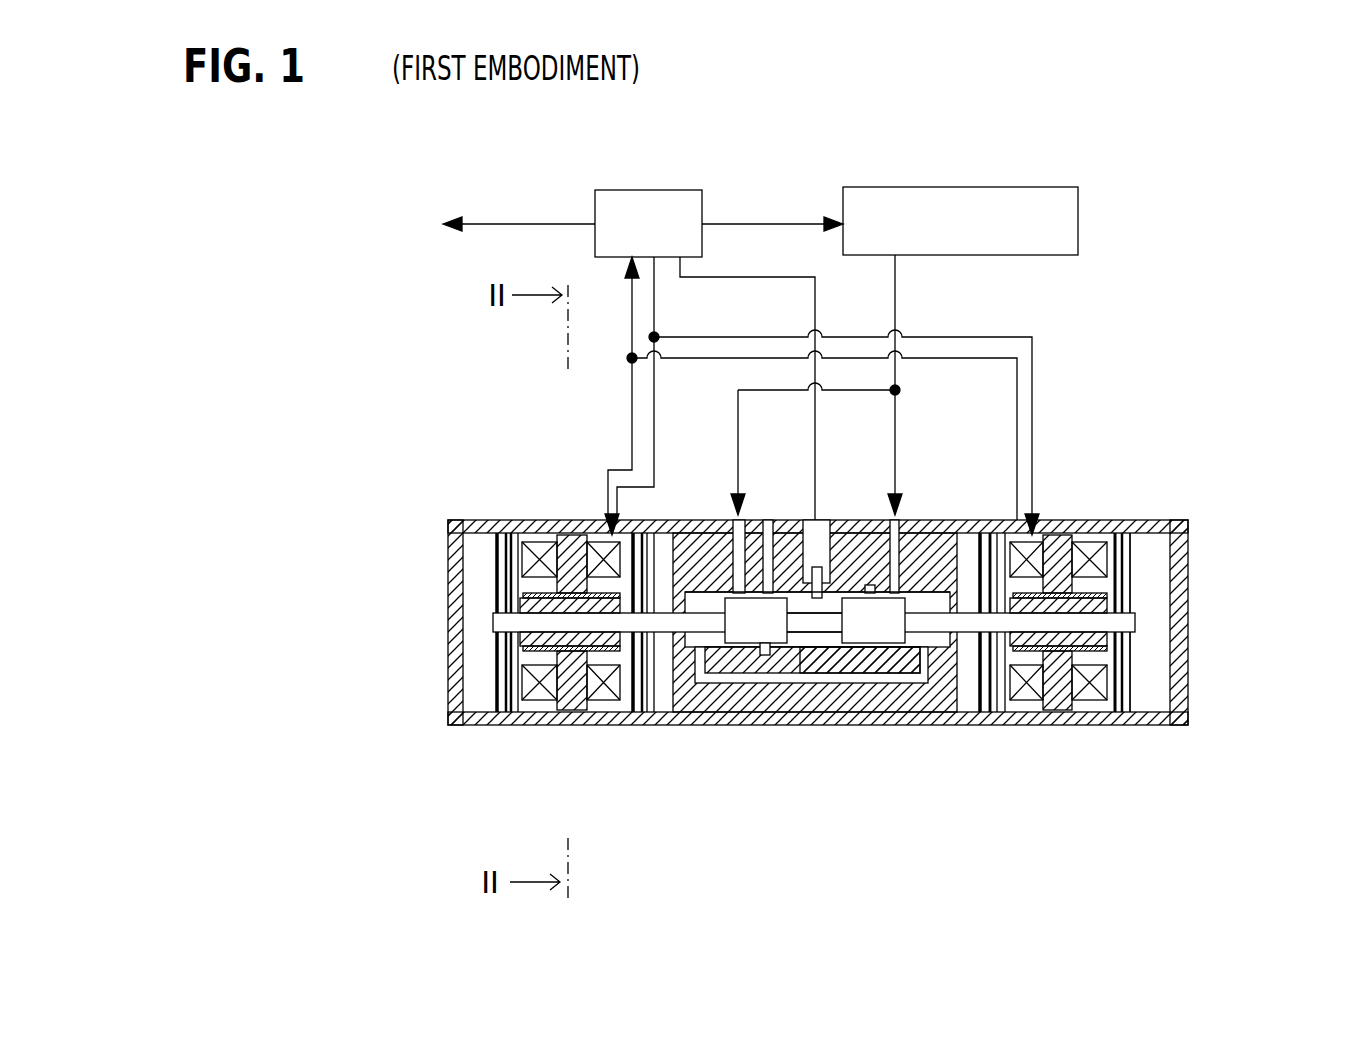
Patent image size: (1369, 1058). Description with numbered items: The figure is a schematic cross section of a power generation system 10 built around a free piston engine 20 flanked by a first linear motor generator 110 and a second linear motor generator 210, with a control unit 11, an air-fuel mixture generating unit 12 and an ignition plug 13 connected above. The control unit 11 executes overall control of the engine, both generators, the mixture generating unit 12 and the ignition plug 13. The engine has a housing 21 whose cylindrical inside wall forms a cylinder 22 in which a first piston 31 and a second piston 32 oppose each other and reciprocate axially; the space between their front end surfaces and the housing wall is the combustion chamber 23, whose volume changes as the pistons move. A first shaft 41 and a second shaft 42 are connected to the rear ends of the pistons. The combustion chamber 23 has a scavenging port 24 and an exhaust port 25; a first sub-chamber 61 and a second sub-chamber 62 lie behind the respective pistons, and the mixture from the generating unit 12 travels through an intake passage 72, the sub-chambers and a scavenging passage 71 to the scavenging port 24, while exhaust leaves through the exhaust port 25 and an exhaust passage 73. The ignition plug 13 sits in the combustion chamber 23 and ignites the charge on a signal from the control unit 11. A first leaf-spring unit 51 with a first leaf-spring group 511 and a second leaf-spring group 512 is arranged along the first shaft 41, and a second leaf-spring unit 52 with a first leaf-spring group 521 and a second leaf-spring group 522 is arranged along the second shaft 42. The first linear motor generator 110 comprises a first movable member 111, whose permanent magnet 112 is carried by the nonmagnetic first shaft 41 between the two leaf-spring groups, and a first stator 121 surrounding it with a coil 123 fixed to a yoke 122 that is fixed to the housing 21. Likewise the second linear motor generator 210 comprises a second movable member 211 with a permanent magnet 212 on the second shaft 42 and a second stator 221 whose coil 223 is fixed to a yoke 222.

The power generation system 10 is at (1120, 325).
The control unit 11 is at (620, 190).
The air-fuel mixture generating unit 12 is at (958, 187).
The ignition plug 13 is at (818, 632).
The free piston engine 20 is at (810, 632).
The housing 21 is at (526, 605).
The cylinder 22 is at (830, 650).
The combustion chamber 23 is at (790, 650).
The scavenging port 24 is at (868, 585).
The exhaust port 25 is at (768, 657).
The first piston 31 is at (758, 645).
The second piston 32 is at (870, 645).
The first shaft 41 is at (655, 712).
The second shaft 42 is at (965, 712).
The first leaf-spring unit 51 is at (475, 697).
The second leaf-spring unit 52 is at (1150, 694).
The first sub-chamber 61 is at (708, 690).
The second sub-chamber 62 is at (920, 690).
The scavenging passage 71 is at (815, 747).
The intake passage 72 is at (735, 530).
The exhaust passage 73 is at (810, 565).
The first linear motor generator 110 is at (448, 548).
The first movable member 111 is at (520, 606).
The permanent magnet 112 is at (588, 592).
The first stator 121 is at (488, 605).
The yoke 122 is at (565, 540).
The coil 123 is at (505, 542).
The second linear motor generator 210 is at (1160, 540).
The second movable member 211 is at (1135, 620).
The permanent magnet 212 is at (1032, 592).
The second stator 221 is at (1127, 589).
The yoke 222 is at (1058, 540).
The coil 223 is at (1012, 545).
The first leaf-spring group 511 is at (470, 522).
The second leaf-spring group 512 is at (663, 535).
The first leaf-spring group 521 is at (1140, 522).
The second leaf-spring group 522 is at (968, 540).